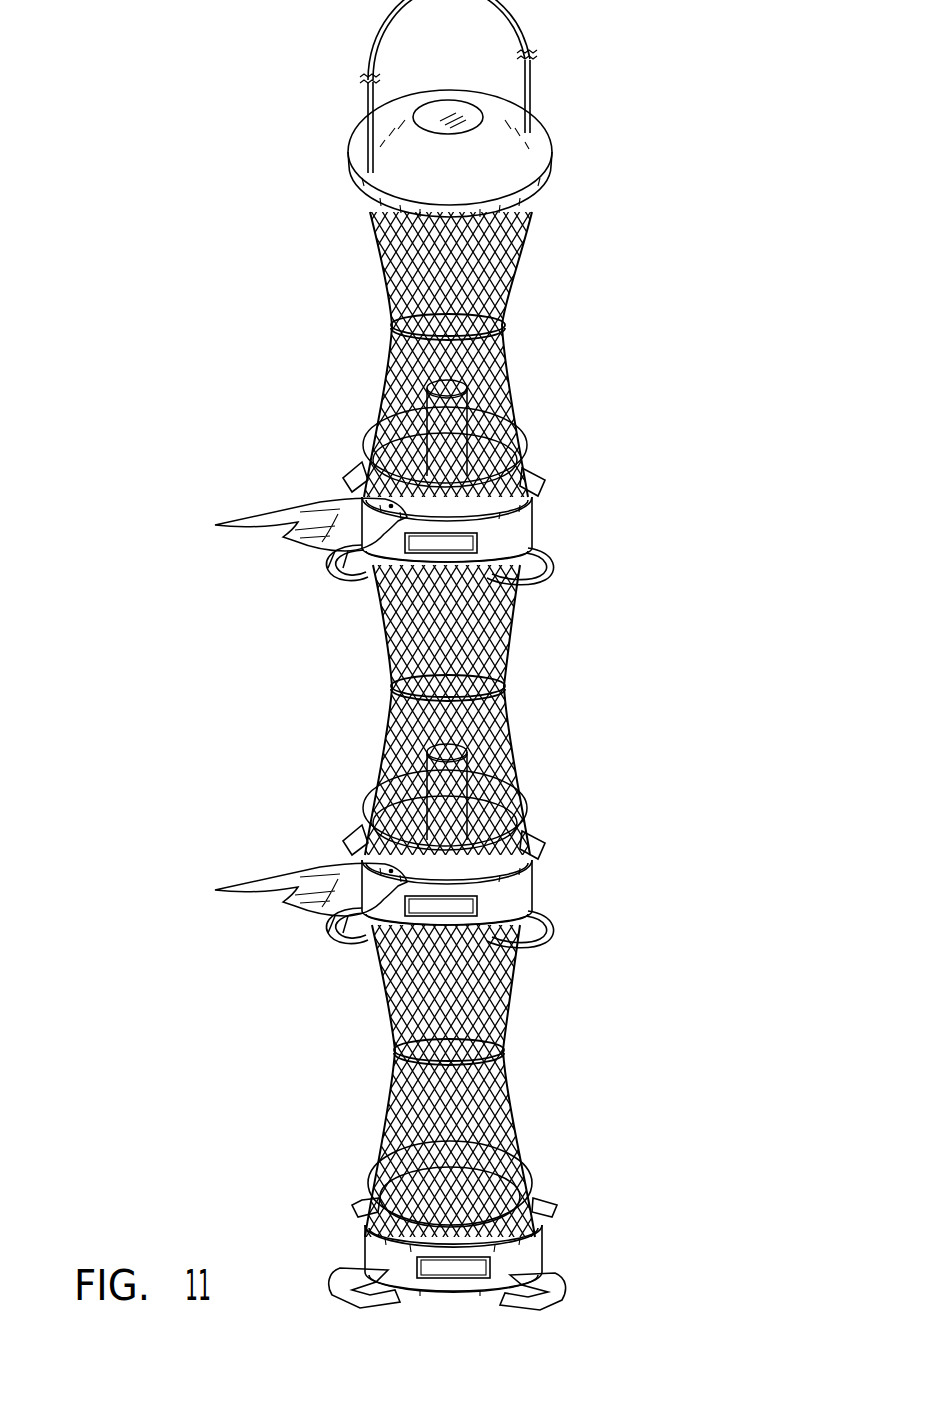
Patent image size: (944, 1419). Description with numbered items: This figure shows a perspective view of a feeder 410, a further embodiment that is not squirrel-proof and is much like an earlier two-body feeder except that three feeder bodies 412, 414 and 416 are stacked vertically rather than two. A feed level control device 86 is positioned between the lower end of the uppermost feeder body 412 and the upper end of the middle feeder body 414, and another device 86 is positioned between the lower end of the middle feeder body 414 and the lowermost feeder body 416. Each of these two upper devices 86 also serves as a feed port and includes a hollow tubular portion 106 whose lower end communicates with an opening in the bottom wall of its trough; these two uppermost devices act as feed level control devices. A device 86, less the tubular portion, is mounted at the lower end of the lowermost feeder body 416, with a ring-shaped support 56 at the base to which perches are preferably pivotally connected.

The feeder 410 is at (588, 278).
The feeder body 412 is at (540, 326).
The hollow tubular portion 106 is at (472, 418).
The feed level control device 86 is at (505, 529).
The feeder body 414 is at (550, 693).
The feeder body 416 is at (552, 1058).
The ring-shaped support 56 is at (535, 1245).